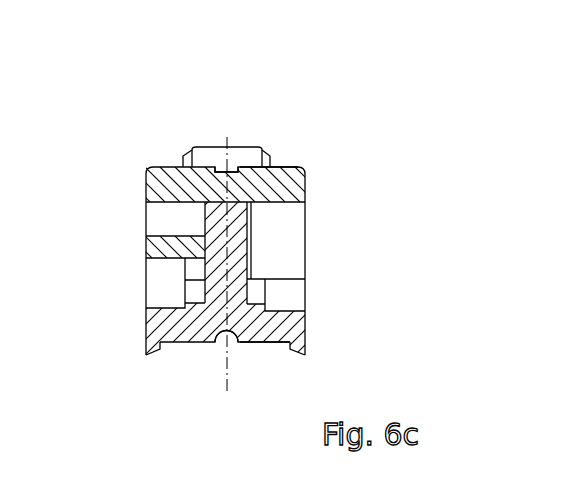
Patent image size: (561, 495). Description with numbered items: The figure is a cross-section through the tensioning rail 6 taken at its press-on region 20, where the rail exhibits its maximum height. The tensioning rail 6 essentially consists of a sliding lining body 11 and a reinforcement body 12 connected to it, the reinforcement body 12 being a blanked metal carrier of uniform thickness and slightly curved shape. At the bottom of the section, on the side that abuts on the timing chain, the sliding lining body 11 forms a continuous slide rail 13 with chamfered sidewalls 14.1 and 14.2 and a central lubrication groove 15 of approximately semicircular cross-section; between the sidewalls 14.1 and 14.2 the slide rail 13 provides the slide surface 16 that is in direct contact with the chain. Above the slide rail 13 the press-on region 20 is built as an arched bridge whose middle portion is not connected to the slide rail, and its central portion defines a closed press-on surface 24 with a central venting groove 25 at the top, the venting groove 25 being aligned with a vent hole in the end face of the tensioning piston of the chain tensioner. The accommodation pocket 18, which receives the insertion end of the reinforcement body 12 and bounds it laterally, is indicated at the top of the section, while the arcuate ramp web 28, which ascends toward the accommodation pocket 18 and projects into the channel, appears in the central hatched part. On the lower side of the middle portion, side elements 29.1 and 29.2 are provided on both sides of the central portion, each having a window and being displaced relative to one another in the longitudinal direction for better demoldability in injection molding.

The tensioning rail 6 is at (318, 158).
The sliding lining body 11 is at (134, 289).
The reinforcement body 12 is at (246, 229).
The slide rail 13 is at (316, 325).
The chamfered sidewall 14.1 is at (147, 358).
The chamfered sidewall 14.2 is at (310, 357).
The central lubrication groove 15 is at (217, 343).
The slide surface 16 is at (268, 343).
The accommodation pocket 18 is at (250, 145).
The press-on region 20 is at (313, 180).
The press-on surface 24 is at (287, 166).
The venting groove 25 is at (224, 168).
The ramp web 28 is at (200, 222).
The side element 29.1 is at (170, 246).
The side element 29.2 is at (289, 272).